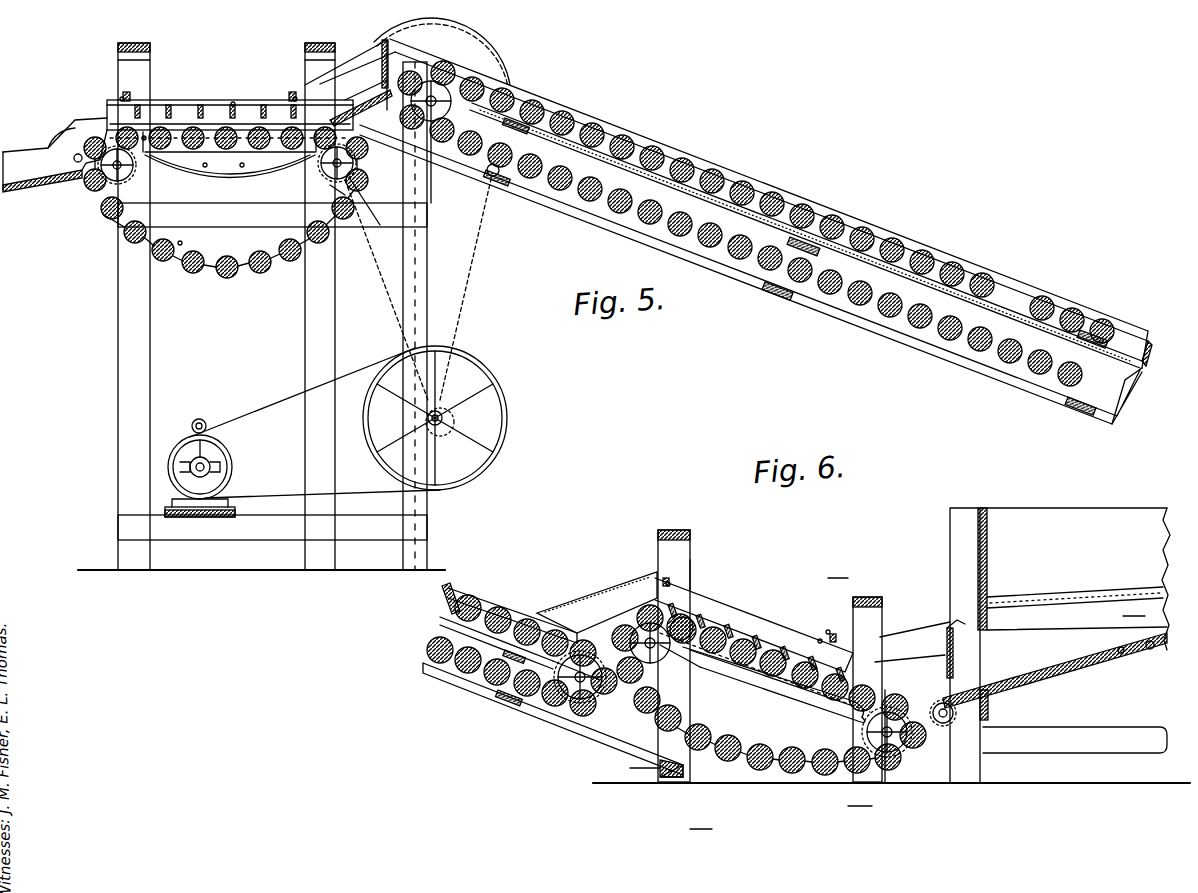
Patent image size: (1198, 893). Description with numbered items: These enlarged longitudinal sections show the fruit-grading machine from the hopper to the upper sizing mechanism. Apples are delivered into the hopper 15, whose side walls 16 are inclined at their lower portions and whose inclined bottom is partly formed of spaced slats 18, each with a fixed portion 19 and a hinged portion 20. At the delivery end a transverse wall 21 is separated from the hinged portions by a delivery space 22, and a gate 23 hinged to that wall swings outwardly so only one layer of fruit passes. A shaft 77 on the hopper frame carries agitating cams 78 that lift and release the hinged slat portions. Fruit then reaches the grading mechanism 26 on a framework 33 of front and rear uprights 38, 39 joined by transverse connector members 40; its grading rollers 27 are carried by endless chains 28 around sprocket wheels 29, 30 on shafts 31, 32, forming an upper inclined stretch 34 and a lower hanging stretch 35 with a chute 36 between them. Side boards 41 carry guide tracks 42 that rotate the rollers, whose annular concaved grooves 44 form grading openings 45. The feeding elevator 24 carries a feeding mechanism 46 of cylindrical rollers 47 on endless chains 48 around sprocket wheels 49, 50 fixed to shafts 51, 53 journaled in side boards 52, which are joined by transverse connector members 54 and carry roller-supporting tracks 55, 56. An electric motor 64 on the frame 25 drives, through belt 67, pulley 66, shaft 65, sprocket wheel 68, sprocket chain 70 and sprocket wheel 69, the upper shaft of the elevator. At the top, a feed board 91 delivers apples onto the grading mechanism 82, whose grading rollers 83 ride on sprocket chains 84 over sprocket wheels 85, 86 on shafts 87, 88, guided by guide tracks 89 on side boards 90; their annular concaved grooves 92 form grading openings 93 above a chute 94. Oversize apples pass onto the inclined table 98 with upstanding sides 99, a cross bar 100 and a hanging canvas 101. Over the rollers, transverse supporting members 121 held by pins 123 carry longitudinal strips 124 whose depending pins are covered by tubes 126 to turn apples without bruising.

In FIG. 6, the hopper 15 is at (1048, 501).
In FIG. 6, the side walls 16 is at (1075, 588).
In FIG. 6, the slats 18 is at (1122, 648).
In FIG. 6, the fixed portion 19 is at (1150, 648).
In FIG. 6, the hinged portion 20 is at (1058, 668).
In FIG. 6, the transverse wall 21 is at (990, 565).
In FIG. 6, the delivery space 22 is at (990, 650).
In FIG. 6, the gate 23 is at (943, 657).
In FIG. 5, the feeding elevator 24 is at (880, 228).
In FIG. 6, the feeding elevator 24 is at (440, 624).
In FIG. 5, the frame 25 is at (428, 245).
In FIG. 6, the grading mechanism 26 is at (827, 630).
In FIG. 6, the grading rollers 27 is at (660, 712).
In FIG. 6, the endless chains 28 is at (728, 762).
In FIG. 6, the sprocket wheels 29 is at (690, 665).
In FIG. 6, the sprocket wheels 30 is at (868, 735).
In FIG. 6, the shaft 31 is at (640, 690).
In FIG. 6, the shaft 32 is at (903, 760).
In FIG. 6, the framework 33 is at (690, 588).
In FIG. 6, the upper inclined stretch 34 is at (840, 680).
In FIG. 6, the lower hanging stretch 35 is at (762, 770).
In FIG. 6, the chute 36 is at (805, 715).
In FIG. 6, the front uprights 38 is at (895, 628).
In FIG. 6, the rear uprights 39 is at (690, 570).
In FIG. 6, the transverse connector members 40 is at (680, 530).
In FIG. 6, the side boards 41 is at (600, 605).
In FIG. 6, the guide track 42 is at (770, 690).
In FIG. 6, the annular concaved grooves 44 is at (690, 745).
In FIG. 6, the grading openings 45 is at (640, 660).
In FIG. 5, the feeding mechanism 46 is at (1045, 296).
In FIG. 6, the feeding mechanism 46 is at (505, 610).
In FIG. 5, the rollers 47 is at (705, 170).
In FIG. 6, the rollers 47 is at (470, 598).
In FIG. 5, the endless chains 48 is at (1040, 376).
In FIG. 6, the endless chains 48 is at (450, 668).
In FIG. 6, the sprocket wheels 49 is at (565, 690).
In FIG. 5, the sprocket wheels 50 is at (508, 95).
In FIG. 6, the shaft 51 is at (600, 700).
In FIG. 5, the side boards 52 is at (1135, 380).
In FIG. 6, the side boards 52 is at (620, 730).
In FIG. 5, the shaft 53 is at (455, 90).
In FIG. 5, the transverse connector members 54 is at (530, 128).
In FIG. 6, the transverse connector members 54 is at (505, 656).
In FIG. 5, the roller-supporting tracks 55 is at (885, 318).
In FIG. 6, the roller-supporting tracks 55 is at (452, 608).
In FIG. 5, the roller-supporting tracks 56 is at (945, 353).
In FIG. 6, the roller-supporting tracks 56 is at (420, 668).
In FIG. 5, the electric motor 64 is at (234, 460).
In FIG. 5, the shaft 65 is at (452, 425).
In FIG. 5, the pulley 66 is at (375, 460).
In FIG. 5, the belt 67 is at (278, 418).
In FIG. 5, the sprocket wheel 68 is at (436, 408).
In FIG. 5, the sprocket wheel 69 is at (447, 175).
In FIG. 5, the sprocket chain 70 is at (466, 280).
In FIG. 6, the shaft 77 is at (990, 708).
In FIG. 6, the agitating cams 78 is at (950, 705).
In FIG. 5, the grading mechanism 82 is at (248, 100).
In FIG. 5, the grading rollers 83 is at (192, 127).
In FIG. 5, the sprocket chains 84 is at (225, 278).
In FIG. 5, the sprocket wheels 85 is at (135, 168).
In FIG. 5, the sprocket wheels 86 is at (320, 166).
In FIG. 5, the shaft 87 is at (93, 190).
In FIG. 5, the shaft 88 is at (333, 178).
In FIG. 5, the guide tracks 89 is at (240, 152).
In FIG. 5, the side boards 90 is at (212, 122).
In FIG. 5, the feed board 91 is at (358, 108).
In FIG. 5, the annular concaved grooves 92 is at (130, 128).
In FIG. 5, the grading openings 93 is at (145, 130).
In FIG. 5, the chute 94 is at (240, 176).
In FIG. 5, the inclined table 98 is at (10, 190).
In FIG. 5, the upstanding sides 99 is at (22, 152).
In FIG. 5, the cross bar 100 is at (78, 155).
In FIG. 5, the canvas 101 is at (58, 150).
In FIG. 5, the transverse supporting members 121 is at (121, 98).
In FIG. 6, the transverse supporting members 121 is at (663, 582).
In FIG. 5, the pins 123 is at (126, 94).
In FIG. 6, the pins 123 is at (668, 585).
In FIG. 5, the longitudinal strips 124 is at (233, 103).
In FIG. 6, the longitudinal strips 124 is at (820, 640).
In FIG. 5, the tubes 126 is at (205, 104).
In FIG. 6, the tubes 126 is at (700, 612).